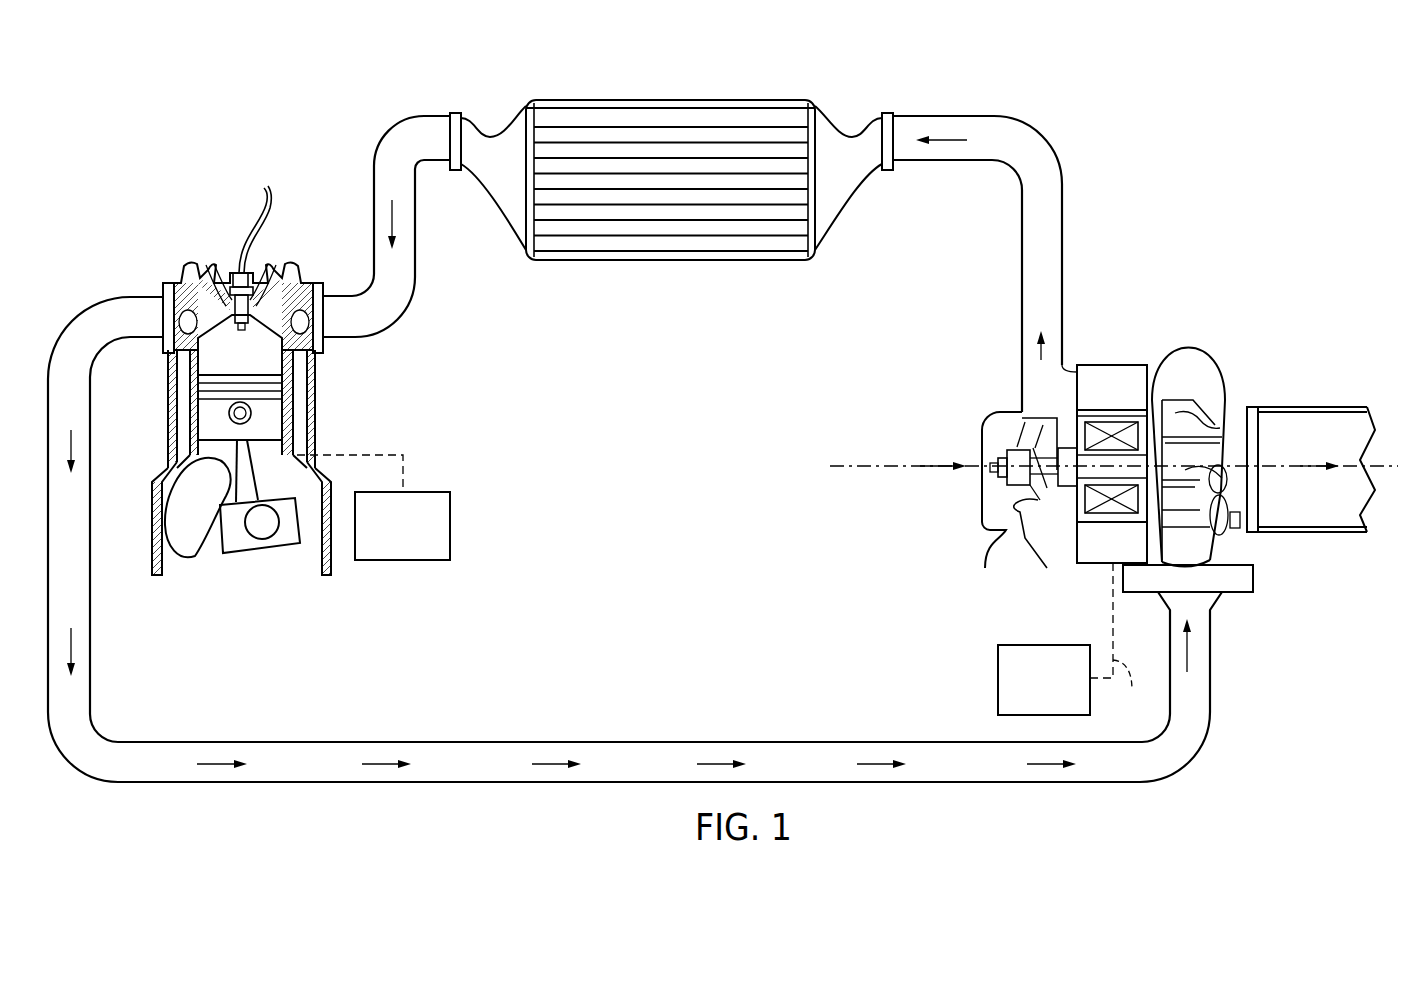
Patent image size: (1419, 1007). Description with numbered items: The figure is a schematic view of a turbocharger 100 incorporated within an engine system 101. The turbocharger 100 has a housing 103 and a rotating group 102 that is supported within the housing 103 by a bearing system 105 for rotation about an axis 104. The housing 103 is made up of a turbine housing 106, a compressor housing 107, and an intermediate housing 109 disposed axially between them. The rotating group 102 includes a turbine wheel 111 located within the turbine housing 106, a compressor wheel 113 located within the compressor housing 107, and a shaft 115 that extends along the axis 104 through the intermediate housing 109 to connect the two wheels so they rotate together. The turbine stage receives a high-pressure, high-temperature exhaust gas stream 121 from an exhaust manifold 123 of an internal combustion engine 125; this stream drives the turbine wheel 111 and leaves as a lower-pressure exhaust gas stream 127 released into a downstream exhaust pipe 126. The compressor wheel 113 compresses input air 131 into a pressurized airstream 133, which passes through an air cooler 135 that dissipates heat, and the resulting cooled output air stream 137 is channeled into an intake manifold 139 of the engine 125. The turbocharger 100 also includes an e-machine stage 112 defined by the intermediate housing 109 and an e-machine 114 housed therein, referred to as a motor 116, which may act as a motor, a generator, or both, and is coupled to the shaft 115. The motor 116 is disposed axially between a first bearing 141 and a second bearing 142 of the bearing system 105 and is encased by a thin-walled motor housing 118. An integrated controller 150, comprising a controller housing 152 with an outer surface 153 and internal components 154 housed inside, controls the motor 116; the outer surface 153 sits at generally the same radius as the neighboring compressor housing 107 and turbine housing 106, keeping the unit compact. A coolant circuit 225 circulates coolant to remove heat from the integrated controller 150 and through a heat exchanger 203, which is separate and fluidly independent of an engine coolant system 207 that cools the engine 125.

The turbocharger 100 is at (1192, 279).
The engine system 101 is at (210, 138).
The rotating group 102 is at (1084, 482).
The housing 103 is at (1174, 333).
The axis 104 is at (1385, 462).
The bearing system 105 is at (1067, 433).
The turbine housing 106 is at (1226, 396).
The compressor housing 107 is at (997, 537).
The intermediate housing 109 is at (1100, 568).
The turbine wheel 111 is at (1222, 457).
The e-machine stage 112 is at (1088, 348).
The compressor wheel 113 is at (995, 532).
The e-machine 114 is at (1126, 529).
The shaft 115 is at (1150, 428).
The motor 116 is at (1150, 497).
The motor housing 118 is at (1108, 522).
The exhaust gas stream 121 is at (716, 762).
The exhaust manifold 123 is at (197, 310).
The internal combustion engine 125 is at (290, 424).
The exhaust pipe 126 is at (1316, 398).
The lower-pressure exhaust gas stream 127 is at (1303, 470).
The input air 131 is at (928, 470).
The pressurized airstream 133 is at (1021, 366).
The air cooler 135 is at (660, 127).
The output air stream 137 is at (388, 218).
The intake manifold 139 is at (303, 333).
The first bearing 141 is at (1222, 464).
The second bearing 142 is at (1066, 462).
The integrated controller 150 is at (1115, 348).
The controller housing 152 is at (1140, 360).
The outer surface 153 is at (1078, 560).
The internal components 154 is at (1078, 370).
The heat exchanger 203 is at (998, 680).
The engine coolant system 207 is at (426, 454).
The coolant circuit 225 is at (1131, 688).